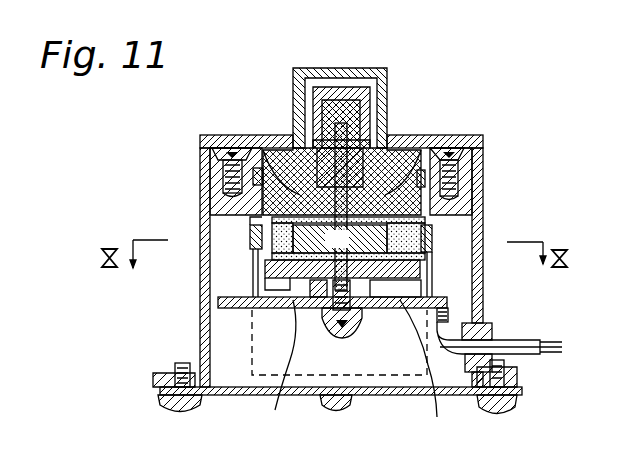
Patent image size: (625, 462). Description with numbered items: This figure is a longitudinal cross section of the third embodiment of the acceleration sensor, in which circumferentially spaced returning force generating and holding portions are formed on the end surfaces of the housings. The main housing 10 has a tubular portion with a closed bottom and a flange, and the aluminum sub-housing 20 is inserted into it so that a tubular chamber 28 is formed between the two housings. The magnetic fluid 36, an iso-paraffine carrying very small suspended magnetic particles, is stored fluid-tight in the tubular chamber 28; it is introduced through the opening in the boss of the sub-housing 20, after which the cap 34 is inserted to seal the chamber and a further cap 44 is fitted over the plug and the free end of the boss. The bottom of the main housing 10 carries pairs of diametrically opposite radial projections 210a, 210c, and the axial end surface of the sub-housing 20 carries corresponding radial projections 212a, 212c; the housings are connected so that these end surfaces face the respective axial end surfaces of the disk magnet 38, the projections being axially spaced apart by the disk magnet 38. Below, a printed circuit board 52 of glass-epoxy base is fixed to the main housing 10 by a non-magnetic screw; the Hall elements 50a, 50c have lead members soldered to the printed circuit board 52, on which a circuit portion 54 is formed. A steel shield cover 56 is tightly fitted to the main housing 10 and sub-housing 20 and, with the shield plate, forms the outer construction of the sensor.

The main housing 10 is at (462, 270).
The sub-housing 20 is at (372, 202).
The tubular chamber 28 is at (252, 250).
The cap 34 is at (362, 85).
The magnetic fluid 36 is at (408, 237).
The disk magnet 38 is at (291, 135).
The cap 44 is at (323, 85).
The Hall element 50a is at (432, 236).
The Hall element 50c is at (250, 232).
The printed circuit board 52 is at (222, 328).
The circuit portion 54 is at (250, 355).
The shield cover 56 is at (480, 301).
The radial projection 210a is at (432, 371).
The radial projection 210c is at (273, 368).
The radial projection 212a is at (433, 145).
The radial projection 212c is at (268, 144).